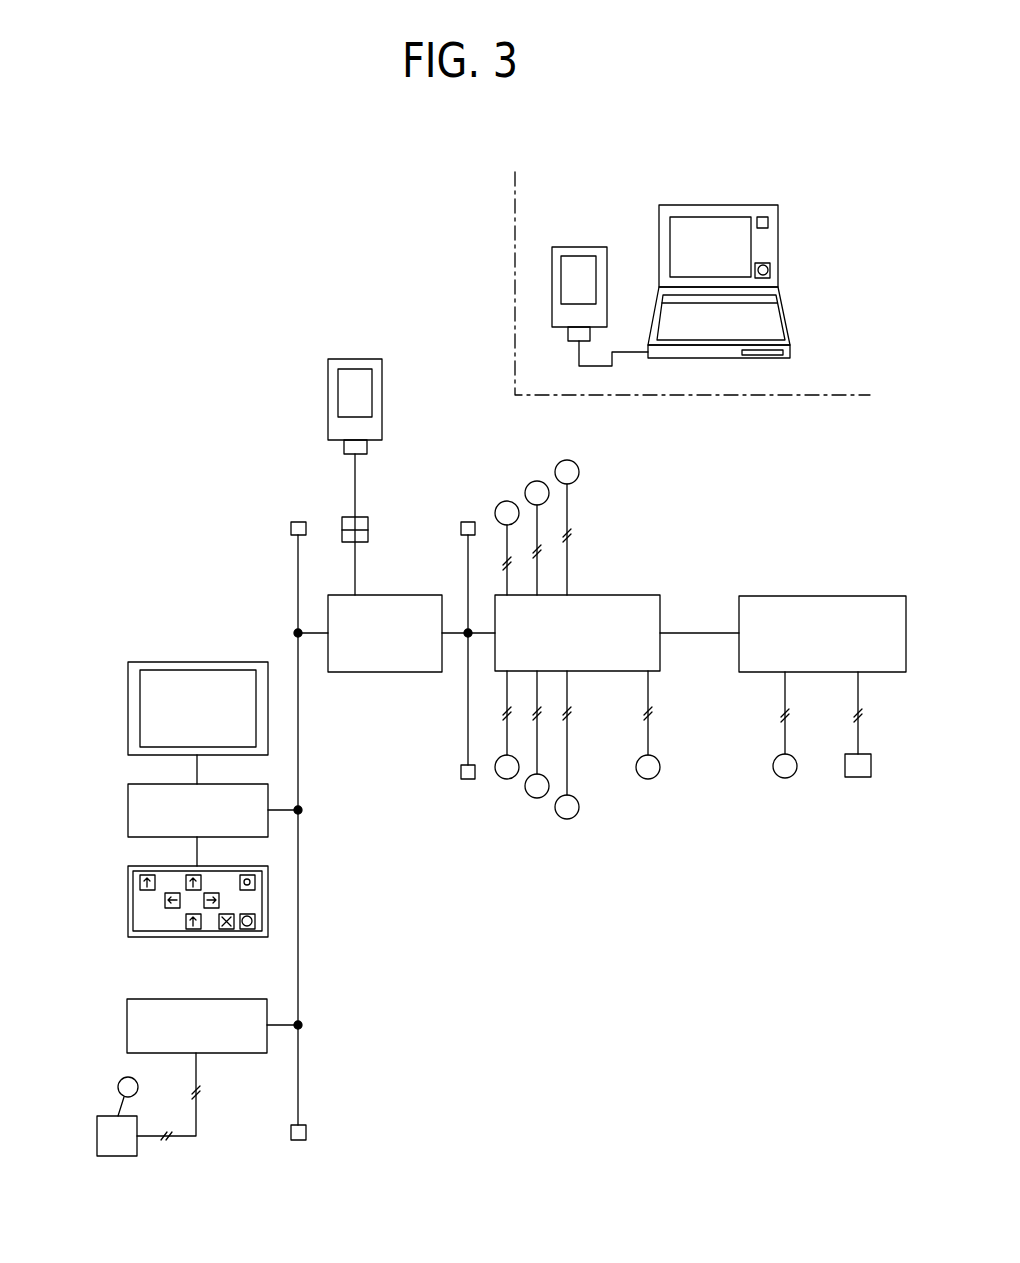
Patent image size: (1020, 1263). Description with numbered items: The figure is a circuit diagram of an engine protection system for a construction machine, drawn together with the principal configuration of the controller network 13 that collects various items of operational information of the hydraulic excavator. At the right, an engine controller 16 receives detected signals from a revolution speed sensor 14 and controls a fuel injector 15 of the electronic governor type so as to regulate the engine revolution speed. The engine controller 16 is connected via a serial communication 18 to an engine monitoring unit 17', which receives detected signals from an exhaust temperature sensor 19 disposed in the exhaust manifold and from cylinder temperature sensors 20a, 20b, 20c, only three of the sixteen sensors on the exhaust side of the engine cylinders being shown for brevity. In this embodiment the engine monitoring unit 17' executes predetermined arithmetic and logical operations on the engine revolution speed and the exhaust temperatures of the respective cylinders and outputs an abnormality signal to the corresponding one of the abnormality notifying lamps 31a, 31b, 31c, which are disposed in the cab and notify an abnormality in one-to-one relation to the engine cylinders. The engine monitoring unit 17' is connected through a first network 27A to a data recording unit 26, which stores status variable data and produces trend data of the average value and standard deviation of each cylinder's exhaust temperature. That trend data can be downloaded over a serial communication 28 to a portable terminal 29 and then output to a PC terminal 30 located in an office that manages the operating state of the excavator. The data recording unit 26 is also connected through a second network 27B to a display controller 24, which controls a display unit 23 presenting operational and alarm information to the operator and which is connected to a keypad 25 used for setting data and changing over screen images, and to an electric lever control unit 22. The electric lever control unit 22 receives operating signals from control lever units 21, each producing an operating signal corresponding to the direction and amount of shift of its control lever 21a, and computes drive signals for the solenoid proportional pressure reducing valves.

The controller network 13 is at (251, 558).
The revolution speed sensor 14 is at (785, 778).
The fuel injector 15 is at (858, 777).
The engine controller 16 is at (825, 596).
The engine monitoring unit 17' is at (577, 605).
The serial communication 18 is at (702, 633).
The exhaust temperature sensor 19 is at (648, 779).
The cylinder temperature sensor 20a is at (503, 779).
The cylinder temperature sensor 20b is at (537, 798).
The cylinder temperature sensor 20c is at (572, 818).
The control lever unit 21 is at (97, 1136).
The control lever 21a is at (118, 1088).
The electric lever control unit 22 is at (127, 1025).
The display unit 23 is at (128, 714).
The display controller 24 is at (128, 812).
The keypad 25 is at (128, 900).
The data recording unit 26 is at (415, 595).
The first network 27A is at (468, 721).
The second network 27B is at (298, 853).
The serial communication 28 is at (357, 483).
The portable terminal 29 is at (356, 359).
The PC terminal 30 is at (720, 205).
The abnormality notifying lamp 31a is at (498, 504).
The abnormality notifying lamp 31b is at (535, 481).
The abnormality notifying lamp 31c is at (574, 461).